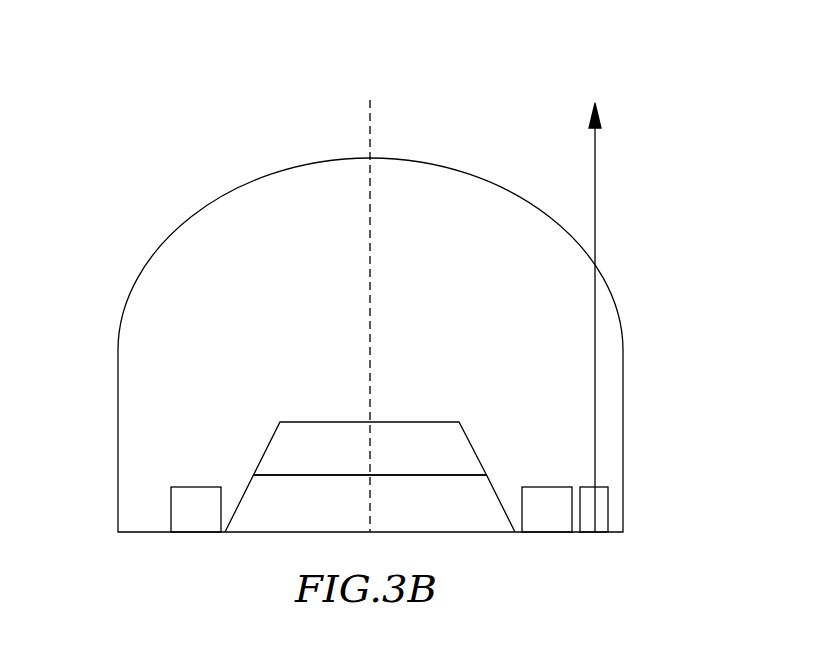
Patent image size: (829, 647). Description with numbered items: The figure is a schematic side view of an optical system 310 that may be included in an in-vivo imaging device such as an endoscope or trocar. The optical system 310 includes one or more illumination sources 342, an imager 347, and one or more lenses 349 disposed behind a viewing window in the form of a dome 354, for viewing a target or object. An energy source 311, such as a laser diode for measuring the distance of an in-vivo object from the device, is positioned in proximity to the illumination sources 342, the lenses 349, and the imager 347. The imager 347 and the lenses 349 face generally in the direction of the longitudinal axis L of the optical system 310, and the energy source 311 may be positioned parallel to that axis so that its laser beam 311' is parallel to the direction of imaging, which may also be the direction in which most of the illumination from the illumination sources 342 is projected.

The optical system 310 is at (680, 73).
The energy source 311 is at (419, 441).
The laser beam 311' is at (645, 317).
The illumination source 342 is at (171, 514).
The imager 347 is at (243, 493).
The lenses 349 is at (267, 443).
The dome 354 is at (605, 300).